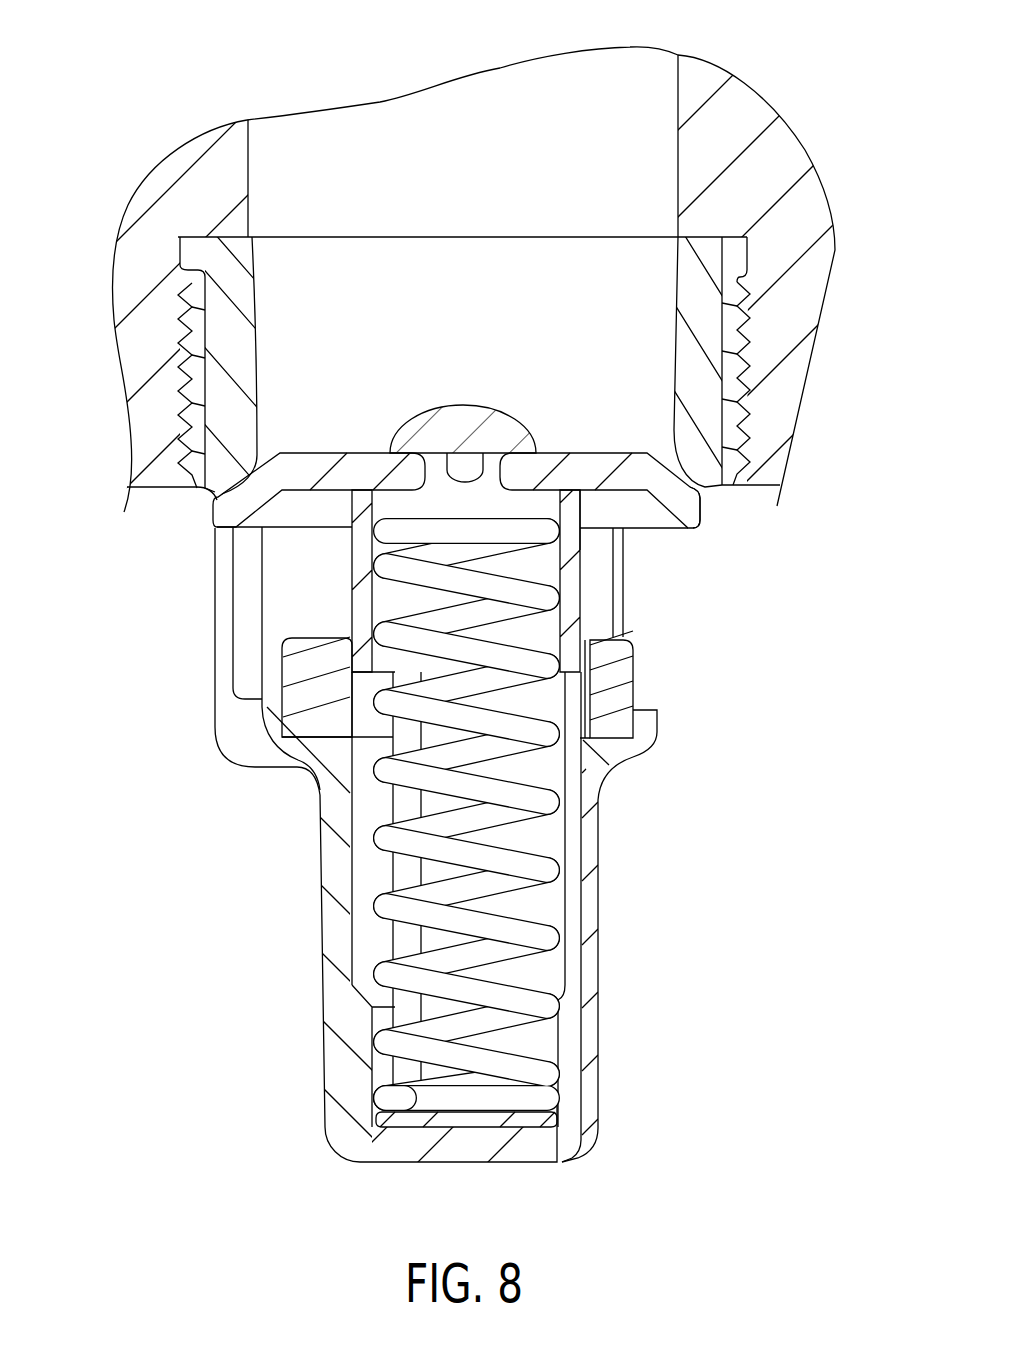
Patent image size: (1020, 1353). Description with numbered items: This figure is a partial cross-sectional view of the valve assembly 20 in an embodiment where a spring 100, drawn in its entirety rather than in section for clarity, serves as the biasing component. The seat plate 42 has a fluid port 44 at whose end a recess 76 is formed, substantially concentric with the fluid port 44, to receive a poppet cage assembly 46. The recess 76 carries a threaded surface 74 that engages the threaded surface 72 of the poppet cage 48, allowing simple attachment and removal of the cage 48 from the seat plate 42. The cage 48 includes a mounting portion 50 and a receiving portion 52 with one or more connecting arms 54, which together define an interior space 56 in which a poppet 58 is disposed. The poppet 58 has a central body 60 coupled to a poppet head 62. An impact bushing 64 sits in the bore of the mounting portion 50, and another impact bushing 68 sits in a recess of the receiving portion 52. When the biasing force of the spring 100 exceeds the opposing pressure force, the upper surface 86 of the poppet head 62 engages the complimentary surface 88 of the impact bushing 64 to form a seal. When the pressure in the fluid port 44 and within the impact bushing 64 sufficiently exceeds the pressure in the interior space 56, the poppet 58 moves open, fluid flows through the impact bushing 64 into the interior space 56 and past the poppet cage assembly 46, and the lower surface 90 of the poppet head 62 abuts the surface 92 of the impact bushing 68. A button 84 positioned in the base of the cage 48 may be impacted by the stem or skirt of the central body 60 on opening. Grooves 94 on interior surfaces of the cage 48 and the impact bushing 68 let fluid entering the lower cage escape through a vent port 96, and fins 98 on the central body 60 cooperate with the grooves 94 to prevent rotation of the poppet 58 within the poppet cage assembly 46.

The valve assembly 20 is at (96, 152).
The seat plate 42 is at (152, 350).
The fluid port 44 is at (678, 75).
The poppet cage assembly 46 is at (202, 851).
The poppet cage 48 is at (660, 742).
The mounting portion 50 is at (735, 478).
The receiving portion 52 is at (345, 1063).
The connecting arm 54 is at (222, 613).
The interior space 56 is at (272, 628).
The poppet 58 is at (322, 598).
The central body 60 is at (575, 625).
The poppet head 62 is at (235, 522).
The impact bushing 64 is at (695, 285).
The impact bushing 68 is at (622, 685).
The threaded surface 72 is at (180, 455).
The threaded surface 74 is at (200, 377).
The recess 76 is at (740, 274).
The button 84 is at (468, 1125).
The upper surface 86 is at (690, 470).
The complimentary surface 88 is at (697, 500).
The lower surface 90 is at (660, 528).
The surface 92 is at (582, 640).
The grooves 94 is at (588, 850).
The vent port 96 is at (567, 1140).
The fins 98 is at (403, 745).
The spring 100 is at (548, 730).